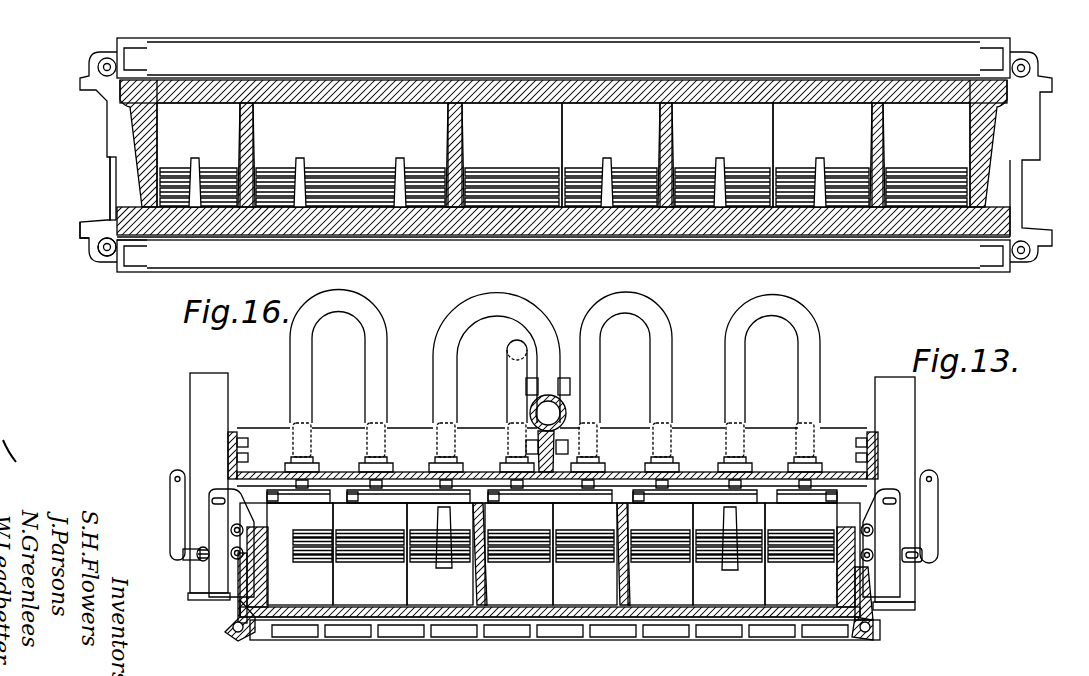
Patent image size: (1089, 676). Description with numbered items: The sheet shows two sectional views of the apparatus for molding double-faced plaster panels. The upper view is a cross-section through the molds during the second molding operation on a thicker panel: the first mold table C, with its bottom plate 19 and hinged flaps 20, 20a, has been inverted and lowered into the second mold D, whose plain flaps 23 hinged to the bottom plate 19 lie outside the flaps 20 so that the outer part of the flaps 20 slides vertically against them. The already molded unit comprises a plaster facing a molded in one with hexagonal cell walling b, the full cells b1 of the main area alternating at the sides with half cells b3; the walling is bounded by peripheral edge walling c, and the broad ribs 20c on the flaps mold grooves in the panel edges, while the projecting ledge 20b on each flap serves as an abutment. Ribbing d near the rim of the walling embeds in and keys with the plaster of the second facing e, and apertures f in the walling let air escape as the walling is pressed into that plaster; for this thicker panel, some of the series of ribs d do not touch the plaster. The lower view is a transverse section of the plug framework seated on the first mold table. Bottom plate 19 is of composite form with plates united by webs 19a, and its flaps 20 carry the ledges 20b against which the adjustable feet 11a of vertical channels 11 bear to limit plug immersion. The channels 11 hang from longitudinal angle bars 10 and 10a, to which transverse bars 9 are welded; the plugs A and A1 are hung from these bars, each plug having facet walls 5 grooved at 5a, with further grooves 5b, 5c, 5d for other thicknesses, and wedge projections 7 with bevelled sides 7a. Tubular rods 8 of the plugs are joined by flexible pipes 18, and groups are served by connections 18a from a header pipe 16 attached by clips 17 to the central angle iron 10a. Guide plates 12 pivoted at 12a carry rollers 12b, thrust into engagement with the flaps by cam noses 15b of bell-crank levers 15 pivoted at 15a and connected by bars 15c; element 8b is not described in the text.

In FIG. 16, the flaps 20 is at (120, 143).
In FIG. 16, the side and end flaps 23 is at (110, 187).
In FIG. 16, the flaps 20a is at (113, 253).
In FIG. 16, the projecting ledge 20b is at (85, 234).
In FIG. 16, the broad ribs 20c is at (147, 227).
In FIG. 16, the bottom plate 19 is at (662, 270).
In FIG. 13, the bottom plate 19 is at (880, 638).
In FIG. 16, the webs 19a is at (847, 258).
In FIG. 13, the webs 19a is at (265, 633).
In FIG. 16, the facing a is at (302, 78).
In FIG. 13, the facing a is at (744, 588).
In FIG. 16, the second facing e is at (773, 233).
In FIG. 16, the first mold table C is at (503, 60).
In FIG. 13, the first mold table C is at (733, 548).
In FIG. 16, the cell walling b is at (680, 143).
In FIG. 13, the cell walling b is at (643, 560).
In FIG. 16, the cells b1 is at (514, 154).
In FIG. 16, the half hexagonal cells b3 is at (199, 149).
In FIG. 16, the apertures f is at (606, 158).
In FIG. 16, the ribbing d is at (930, 177).
In FIG. 16, the mold D is at (460, 243).
In FIG. 13, the channels 11 is at (202, 390).
In FIG. 13, the adjustable foot 11a is at (900, 607).
In FIG. 13, the longitudinal angle bars 10 is at (258, 470).
In FIG. 13, the central angle iron 10a is at (588, 470).
In FIG. 13, the bars 9 is at (337, 470).
In FIG. 13, the tubular rods 8 is at (432, 426).
In FIG. 13, the hanger 8b is at (434, 446).
In FIG. 13, the flexible pipes 18 is at (663, 328).
In FIG. 13, the flexible connections 18a is at (512, 305).
In FIG. 13, the clips 17 is at (566, 385).
In FIG. 13, the header pipe 16 is at (568, 412).
In FIG. 13, the ribs or projections 7 is at (742, 548).
In FIG. 13, the side 7a is at (727, 548).
In FIG. 13, the facet walls 5 is at (440, 599).
In FIG. 13, the grooves 5a is at (545, 545).
In FIG. 13, the grooves 5b is at (512, 545).
In FIG. 13, the grooves 5c is at (583, 545).
In FIG. 13, the grooves 5d is at (615, 545).
In FIG. 13, the plug A is at (376, 599).
In FIG. 13, the plugs A1 is at (304, 599).
In FIG. 13, the bell-crank levers 15 is at (175, 510).
In FIG. 13, the pivot 15a is at (197, 553).
In FIG. 13, the cam noses 15b is at (250, 537).
In FIG. 13, the bars 15c is at (170, 475).
In FIG. 13, the edge walling c is at (247, 560).
In FIG. 13, the guide members 12 is at (890, 579).
In FIG. 13, the pivot 12a is at (900, 497).
In FIG. 13, the transverse rollers 12b is at (874, 555).